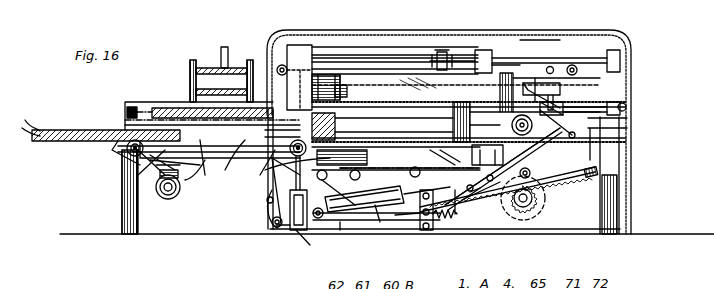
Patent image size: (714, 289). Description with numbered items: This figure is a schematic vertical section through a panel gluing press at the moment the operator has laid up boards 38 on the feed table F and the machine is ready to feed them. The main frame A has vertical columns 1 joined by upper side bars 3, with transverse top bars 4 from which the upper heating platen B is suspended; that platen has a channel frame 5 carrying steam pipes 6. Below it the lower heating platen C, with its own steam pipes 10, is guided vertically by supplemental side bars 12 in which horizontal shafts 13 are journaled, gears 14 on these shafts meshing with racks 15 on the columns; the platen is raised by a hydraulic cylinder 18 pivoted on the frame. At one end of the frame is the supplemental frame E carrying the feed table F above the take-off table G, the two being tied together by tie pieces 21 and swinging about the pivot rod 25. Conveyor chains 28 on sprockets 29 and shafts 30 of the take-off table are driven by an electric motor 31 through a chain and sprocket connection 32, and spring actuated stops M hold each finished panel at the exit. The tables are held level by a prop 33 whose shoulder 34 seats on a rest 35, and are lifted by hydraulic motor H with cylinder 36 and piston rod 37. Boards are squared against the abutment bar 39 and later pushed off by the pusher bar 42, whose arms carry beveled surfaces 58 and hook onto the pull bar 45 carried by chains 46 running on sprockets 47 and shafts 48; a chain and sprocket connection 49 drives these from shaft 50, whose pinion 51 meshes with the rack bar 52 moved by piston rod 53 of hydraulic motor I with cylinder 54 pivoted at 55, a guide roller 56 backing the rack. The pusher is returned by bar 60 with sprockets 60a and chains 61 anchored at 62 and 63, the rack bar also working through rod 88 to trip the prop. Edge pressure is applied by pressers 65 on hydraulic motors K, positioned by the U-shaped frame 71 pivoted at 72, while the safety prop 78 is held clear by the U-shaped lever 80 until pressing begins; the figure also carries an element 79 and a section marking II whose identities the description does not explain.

The vertical side posts or columns 1 is at (287, 50).
The upper side bars 3 is at (537, 75).
The transverse top bars 4 is at (502, 73).
The frame 5 is at (405, 68).
The steam pipes 6 is at (390, 112).
The steam pipes 10 is at (390, 136).
The supplemental side bars 12 is at (478, 150).
The horizontal shafts 13 is at (280, 168).
The gears 14 is at (334, 199).
The racks 15 is at (205, 150).
The cylinder 18 is at (318, 222).
The tie pieces 21 is at (148, 168).
The pivot rod 25 is at (127, 112).
The conveyor chains 28 is at (232, 160).
The sprockets 29 is at (118, 158).
The shafts 30 is at (118, 148).
The electric motor 31 is at (160, 200).
The chain and sprocket connection 32 is at (125, 208).
The prop 33 is at (270, 215).
The shoulder 34 is at (265, 175).
The rest 35 is at (282, 228).
The cylinder 36 is at (272, 205).
The piston rod 37 is at (305, 145).
The boards 38 is at (225, 47).
The abutment bar 39 is at (342, 75).
The pusher bar 42 is at (127, 110).
The pull bar 45 is at (324, 126).
The chains 46 is at (452, 112).
The sprockets 47 is at (554, 95).
The shafts 48 is at (550, 129).
The chain and sprocket connection 49 is at (534, 194).
The shaft 50 is at (536, 210).
The pinion 51 is at (520, 215).
The rack bar 52 is at (505, 205).
The piston rod 53 is at (405, 222).
The cylinder 54 is at (380, 222).
The pivot 55 is at (308, 245).
The guide roller 56 is at (550, 170).
The beveled surfaces 58 is at (333, 115).
The bar 60 is at (484, 48).
The sprockets 60a is at (445, 50).
The chains 61 is at (388, 47).
The frame connection 62 is at (325, 75).
The pusher arm connection 63 is at (294, 77).
The pressers 65 is at (530, 75).
The U-shaped frame 71 is at (564, 58).
The pivot 72 is at (588, 50).
The safety prop 78 is at (445, 157).
The carriage 79 is at (412, 150).
The U-shaped lever 80 is at (624, 108).
The rod 88 is at (410, 222).
The frame A is at (500, 55).
The upper heating platen B is at (376, 72).
The lower heating platen C is at (415, 128).
The supplemental frame E is at (178, 100).
The feed table F is at (188, 185).
The take-off table G is at (165, 190).
The hydraulic motor H is at (298, 232).
The hydraulic motor I is at (370, 215).
The section II is at (345, 222).
The hydraulic motor K is at (607, 175).
The spring actuated stops M is at (125, 147).